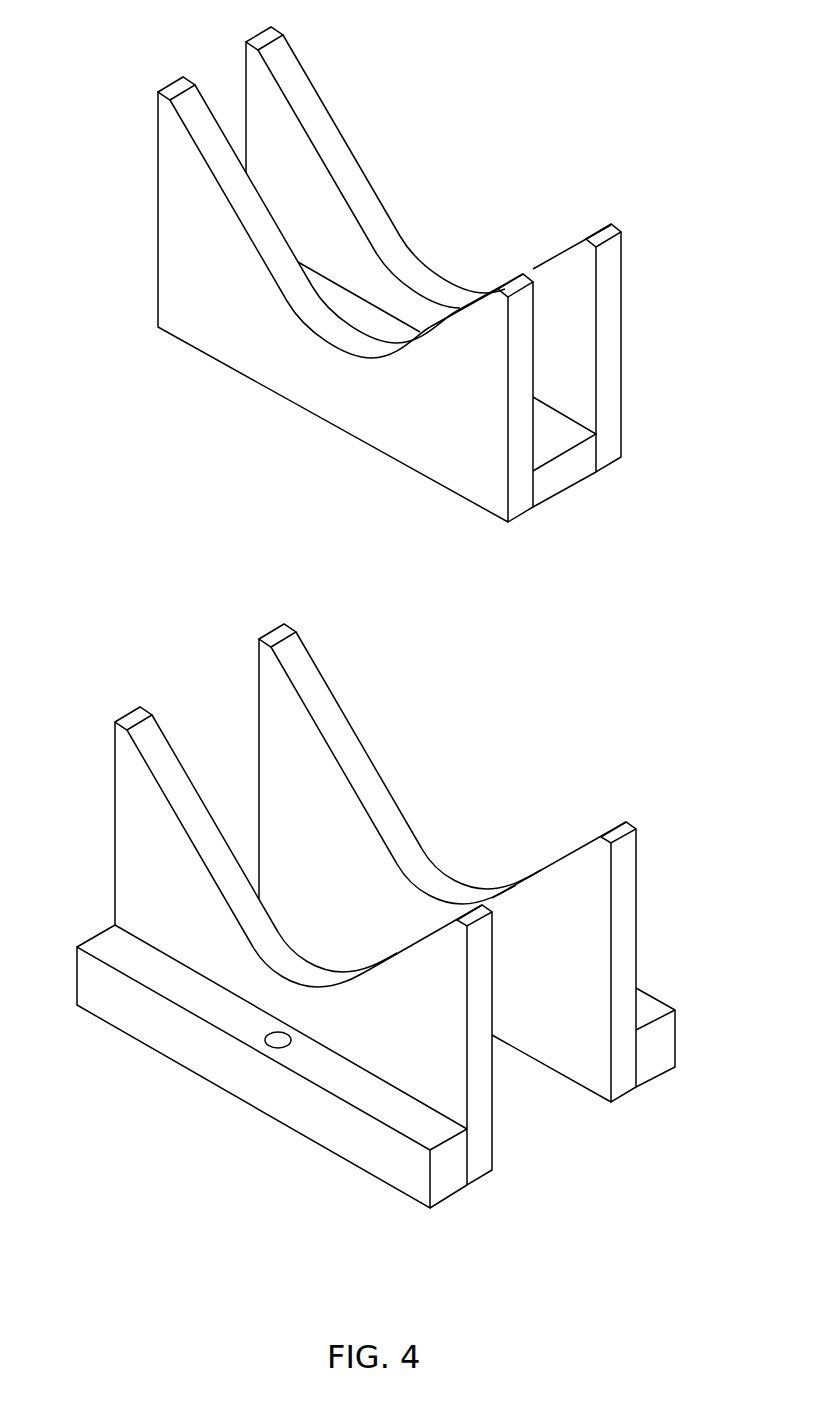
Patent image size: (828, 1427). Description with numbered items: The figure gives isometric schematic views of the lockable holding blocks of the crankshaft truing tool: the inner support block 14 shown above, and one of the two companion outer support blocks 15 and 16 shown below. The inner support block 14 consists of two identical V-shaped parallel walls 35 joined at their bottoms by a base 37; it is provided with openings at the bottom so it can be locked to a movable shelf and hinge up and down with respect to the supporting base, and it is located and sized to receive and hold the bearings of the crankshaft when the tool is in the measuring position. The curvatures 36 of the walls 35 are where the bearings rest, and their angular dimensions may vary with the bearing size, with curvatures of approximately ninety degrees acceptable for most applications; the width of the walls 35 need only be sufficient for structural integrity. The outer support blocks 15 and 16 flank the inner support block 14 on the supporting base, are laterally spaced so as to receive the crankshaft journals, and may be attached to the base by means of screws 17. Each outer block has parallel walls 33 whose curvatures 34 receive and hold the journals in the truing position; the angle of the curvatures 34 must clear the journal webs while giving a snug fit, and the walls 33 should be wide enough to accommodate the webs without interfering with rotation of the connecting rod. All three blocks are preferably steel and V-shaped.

The inner support block 14 is at (344, 107).
The V-shape parallel walls 35 is at (622, 361).
The curvatures 36 is at (429, 275).
The base 37 is at (572, 486).
The outer support block 15 is at (426, 1001).
The outer support block 16 is at (575, 941).
The parallel walls 33 is at (638, 935).
The curvatures 34 is at (439, 870).
The screws 17 is at (260, 1053).